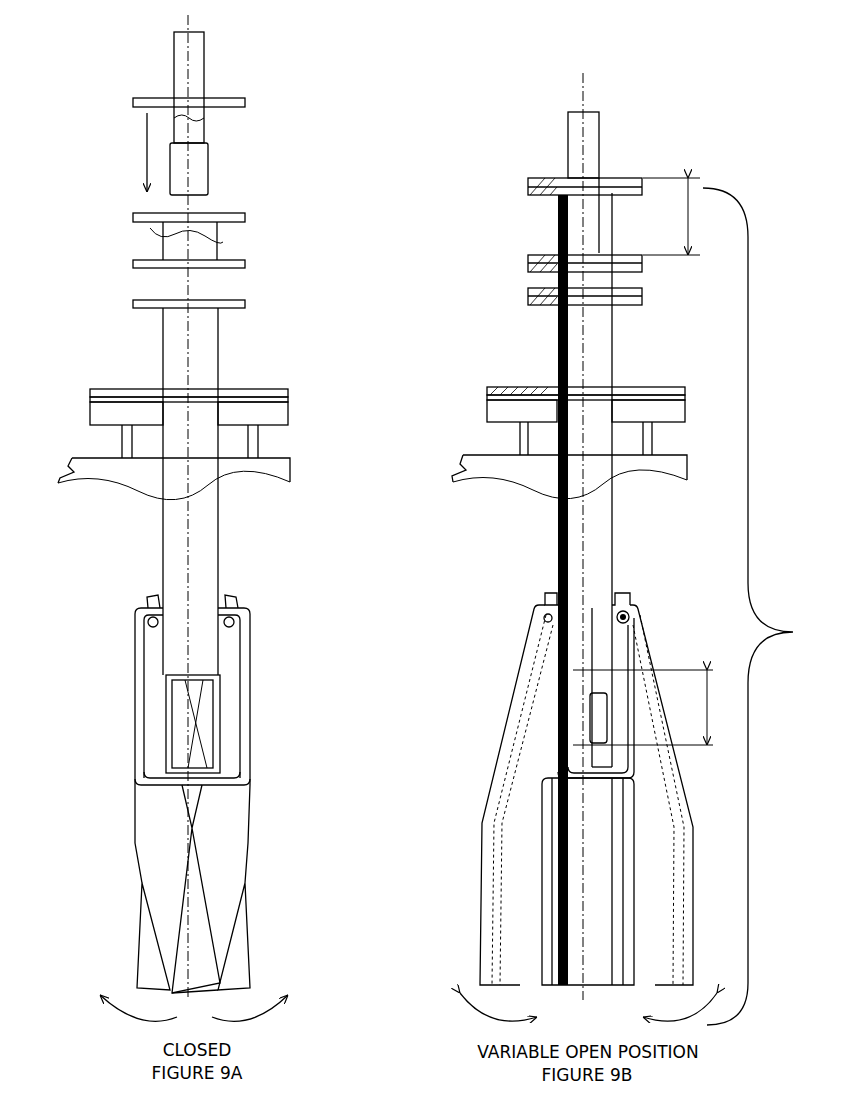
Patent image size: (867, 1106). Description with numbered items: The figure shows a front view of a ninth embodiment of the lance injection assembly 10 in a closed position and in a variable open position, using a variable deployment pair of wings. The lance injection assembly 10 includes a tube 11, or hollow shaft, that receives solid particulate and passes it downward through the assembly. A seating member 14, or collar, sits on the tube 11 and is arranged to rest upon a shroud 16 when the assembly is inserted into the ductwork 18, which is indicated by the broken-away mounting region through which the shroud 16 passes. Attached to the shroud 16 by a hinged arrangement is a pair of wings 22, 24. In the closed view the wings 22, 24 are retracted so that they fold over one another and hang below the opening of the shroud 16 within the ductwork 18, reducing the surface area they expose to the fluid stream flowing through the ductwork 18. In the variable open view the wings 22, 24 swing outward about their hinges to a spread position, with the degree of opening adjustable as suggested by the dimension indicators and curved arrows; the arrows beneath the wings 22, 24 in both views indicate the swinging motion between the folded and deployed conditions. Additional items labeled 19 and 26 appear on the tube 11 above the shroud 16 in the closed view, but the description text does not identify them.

In FIG. 9B, the lance injection assembly 10 is at (793, 632).
In FIG. 9A, the tube 11 is at (124, 87).
In FIG. 9A, the seating member 14 is at (248, 66).
In FIG. 9A, the shroud 16 is at (266, 465).
In FIG. 9B, the shroud 16 is at (505, 486).
In FIG. 9A, the ductwork 18 is at (240, 401).
In FIG. 9B, the ductwork 18 is at (569, 443).
In FIG. 9A, the coupling block 19 is at (256, 152).
In FIG. 9A, the wing 22 is at (98, 824).
In FIG. 9B, the wing 22 is at (463, 789).
In FIG. 9A, the wing 24 is at (286, 827).
In FIG. 9B, the wing 24 is at (675, 781).
In FIG. 9A, the spring assembly 26 is at (265, 217).